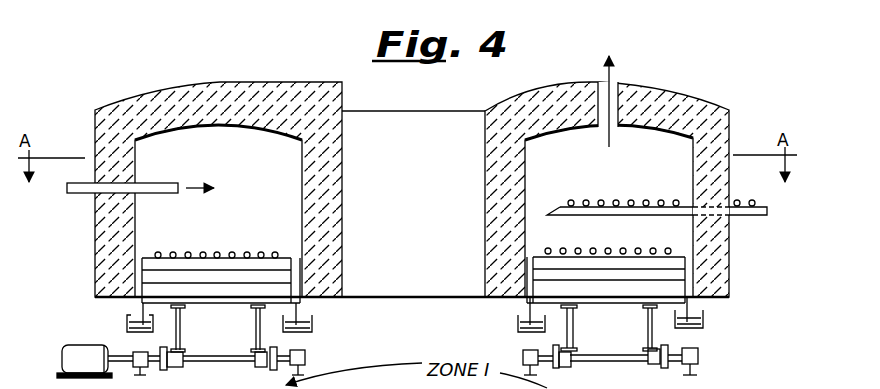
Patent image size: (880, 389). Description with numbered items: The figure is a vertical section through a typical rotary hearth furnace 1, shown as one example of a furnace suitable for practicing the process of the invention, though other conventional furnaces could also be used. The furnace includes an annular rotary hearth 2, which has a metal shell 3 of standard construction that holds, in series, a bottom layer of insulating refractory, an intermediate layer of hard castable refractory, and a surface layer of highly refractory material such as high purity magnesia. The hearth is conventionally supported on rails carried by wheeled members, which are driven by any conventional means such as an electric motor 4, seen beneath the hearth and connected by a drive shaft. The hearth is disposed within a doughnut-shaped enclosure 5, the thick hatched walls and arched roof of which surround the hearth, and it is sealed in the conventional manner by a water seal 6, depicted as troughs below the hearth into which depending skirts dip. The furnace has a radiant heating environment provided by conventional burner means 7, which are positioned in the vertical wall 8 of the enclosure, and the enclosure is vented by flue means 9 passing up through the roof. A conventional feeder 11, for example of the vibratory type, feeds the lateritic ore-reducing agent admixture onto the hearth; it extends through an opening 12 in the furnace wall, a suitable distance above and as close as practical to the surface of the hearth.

The rotary hearth furnace 1 is at (413, 178).
The annular rotary hearth 2 is at (272, 287).
The metal shell 3 is at (148, 300).
The electric motor 4 is at (72, 347).
The enclosure 5 is at (716, 133).
The water seal 6 is at (303, 331).
The burner means 7 is at (78, 191).
The vertical wall 8 is at (100, 269).
The flue means 9 is at (614, 83).
The feeder 11 is at (766, 212).
The opening 12 is at (718, 221).